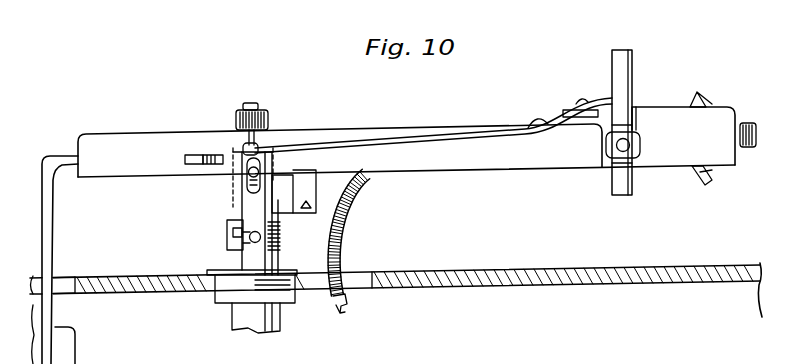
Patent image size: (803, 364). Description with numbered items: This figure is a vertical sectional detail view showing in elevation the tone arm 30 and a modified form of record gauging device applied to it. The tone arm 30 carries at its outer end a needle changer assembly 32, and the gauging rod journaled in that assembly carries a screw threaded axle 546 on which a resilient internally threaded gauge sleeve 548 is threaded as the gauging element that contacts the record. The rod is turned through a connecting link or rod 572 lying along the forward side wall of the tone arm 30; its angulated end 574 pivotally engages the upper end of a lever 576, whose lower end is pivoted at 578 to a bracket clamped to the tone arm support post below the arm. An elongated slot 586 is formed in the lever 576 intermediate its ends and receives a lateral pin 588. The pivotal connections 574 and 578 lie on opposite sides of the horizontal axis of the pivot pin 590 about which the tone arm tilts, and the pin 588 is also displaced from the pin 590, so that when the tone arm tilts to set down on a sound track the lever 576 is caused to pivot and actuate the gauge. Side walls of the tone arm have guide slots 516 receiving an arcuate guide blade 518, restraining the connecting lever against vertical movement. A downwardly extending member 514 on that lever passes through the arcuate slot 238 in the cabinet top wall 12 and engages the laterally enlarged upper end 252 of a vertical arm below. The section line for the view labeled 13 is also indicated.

The tone arm 30 is at (113, 143).
The guide slots 516 is at (194, 152).
The arcuate guide blade 518 is at (210, 152).
The pivot pin 590 is at (266, 108).
The angulated end of connecting link 574 is at (256, 148).
The connecting link or rod 572 is at (370, 142).
The elongated slot 586 is at (258, 188).
The lateral pin 588 is at (253, 178).
The lever 576 is at (248, 205).
The pivot 578 is at (233, 239).
The downwardly extending member 514 is at (48, 226).
The arcuate slot 238 is at (62, 286).
The top wall 12 is at (77, 254).
The laterally enlarged upper end 252 is at (72, 358).
The gauge sleeve 548 is at (623, 68).
The screw threaded axle 546 is at (627, 182).
The section line 13 is at (622, 48).
The needle changer assembly 32 is at (720, 103).